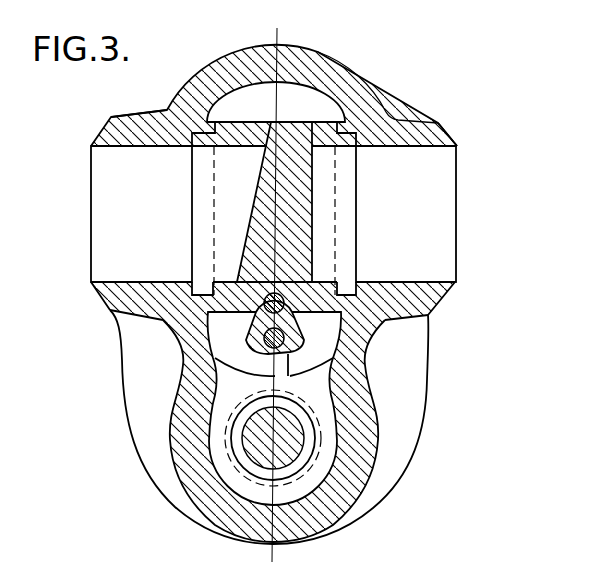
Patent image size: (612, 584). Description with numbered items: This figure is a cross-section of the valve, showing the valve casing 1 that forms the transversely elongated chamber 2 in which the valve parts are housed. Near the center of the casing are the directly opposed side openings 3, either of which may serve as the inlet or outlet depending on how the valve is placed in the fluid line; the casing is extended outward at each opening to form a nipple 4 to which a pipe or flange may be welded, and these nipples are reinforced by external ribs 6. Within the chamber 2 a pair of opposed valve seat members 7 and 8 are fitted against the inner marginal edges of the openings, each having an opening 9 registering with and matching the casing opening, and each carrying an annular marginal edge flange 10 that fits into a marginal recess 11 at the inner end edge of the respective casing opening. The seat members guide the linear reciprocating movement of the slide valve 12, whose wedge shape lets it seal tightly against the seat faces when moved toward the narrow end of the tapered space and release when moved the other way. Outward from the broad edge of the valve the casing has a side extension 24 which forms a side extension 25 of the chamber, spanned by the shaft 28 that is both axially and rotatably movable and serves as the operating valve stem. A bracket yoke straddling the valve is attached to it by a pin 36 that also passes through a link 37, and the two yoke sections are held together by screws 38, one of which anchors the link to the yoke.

The valve casing 1 is at (302, 33).
The chamber 2 is at (276, 102).
The side openings 3 is at (273, 214).
The nipple 4 is at (433, 137).
The external ribs 6 is at (163, 100).
The valve seat member 7 is at (325, 130).
The valve seat member 8 is at (233, 131).
The seat member opening 9 is at (359, 183).
The annular marginal edge flange 10 is at (212, 295).
The marginal recess 11 is at (200, 302).
The slide valve 12 is at (274, 202).
The side extension of casing 24 is at (180, 415).
The side extension of valve chamber 25 is at (317, 393).
The shaft 28 is at (267, 413).
The pin 36 is at (252, 314).
The link 37 is at (298, 325).
The screws 38 is at (290, 370).